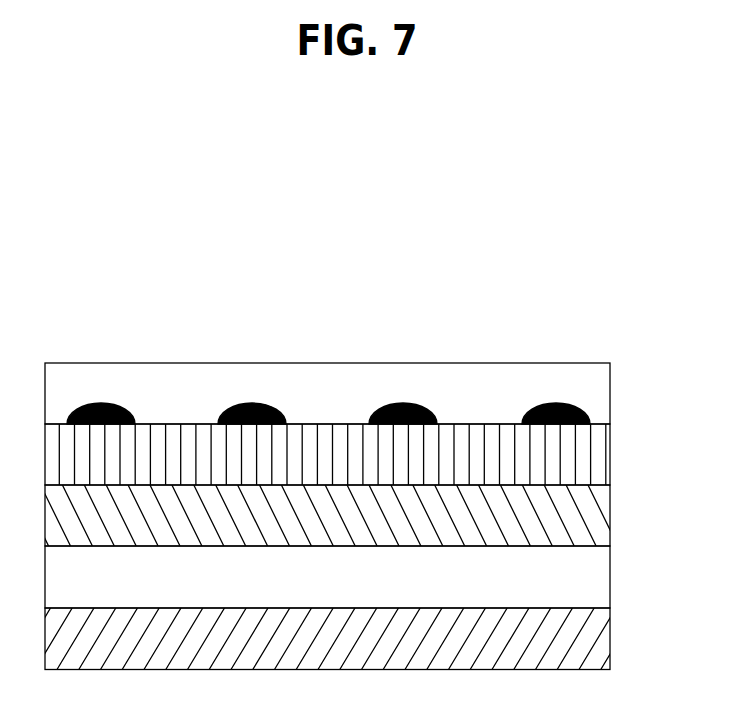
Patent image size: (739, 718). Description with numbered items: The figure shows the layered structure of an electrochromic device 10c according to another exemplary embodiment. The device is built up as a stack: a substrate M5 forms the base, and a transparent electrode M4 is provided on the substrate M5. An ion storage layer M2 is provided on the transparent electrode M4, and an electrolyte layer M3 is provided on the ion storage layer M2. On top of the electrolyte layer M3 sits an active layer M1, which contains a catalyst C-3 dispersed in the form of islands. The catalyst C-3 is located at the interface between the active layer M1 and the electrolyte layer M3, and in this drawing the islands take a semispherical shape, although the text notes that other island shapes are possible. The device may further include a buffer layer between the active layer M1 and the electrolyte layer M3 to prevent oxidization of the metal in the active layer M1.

The electrochromic device 10c is at (72, 237).
The catalyst C-3 is at (552, 403).
The active layer M1 is at (610, 391).
The ion storage layer M2 is at (610, 515).
The electrolyte layer M3 is at (610, 453).
The transparent electrode M4 is at (610, 577).
The substrate M5 is at (610, 639).